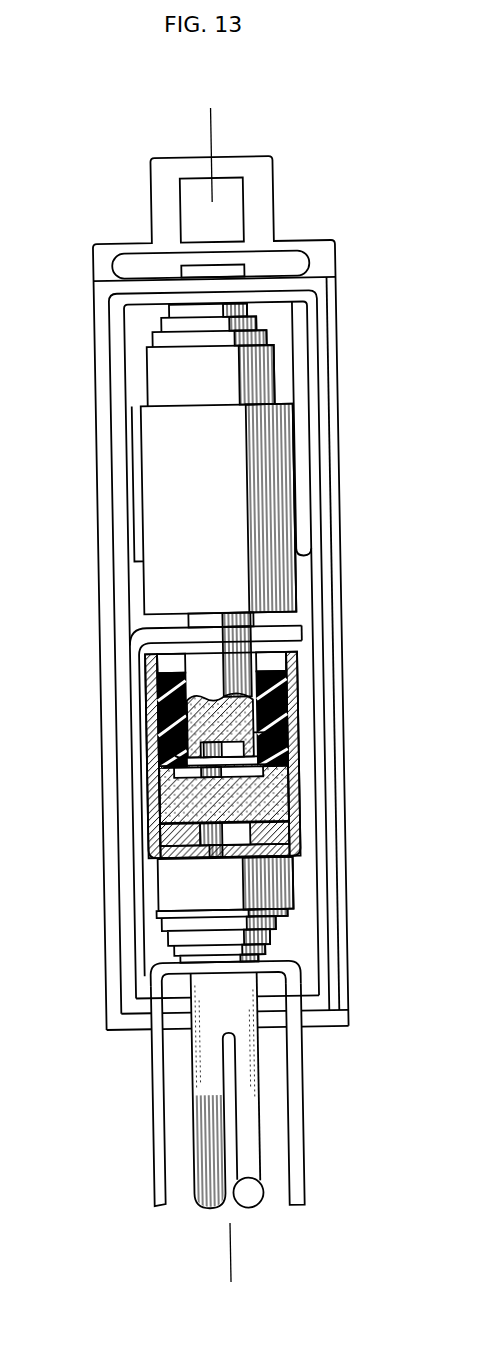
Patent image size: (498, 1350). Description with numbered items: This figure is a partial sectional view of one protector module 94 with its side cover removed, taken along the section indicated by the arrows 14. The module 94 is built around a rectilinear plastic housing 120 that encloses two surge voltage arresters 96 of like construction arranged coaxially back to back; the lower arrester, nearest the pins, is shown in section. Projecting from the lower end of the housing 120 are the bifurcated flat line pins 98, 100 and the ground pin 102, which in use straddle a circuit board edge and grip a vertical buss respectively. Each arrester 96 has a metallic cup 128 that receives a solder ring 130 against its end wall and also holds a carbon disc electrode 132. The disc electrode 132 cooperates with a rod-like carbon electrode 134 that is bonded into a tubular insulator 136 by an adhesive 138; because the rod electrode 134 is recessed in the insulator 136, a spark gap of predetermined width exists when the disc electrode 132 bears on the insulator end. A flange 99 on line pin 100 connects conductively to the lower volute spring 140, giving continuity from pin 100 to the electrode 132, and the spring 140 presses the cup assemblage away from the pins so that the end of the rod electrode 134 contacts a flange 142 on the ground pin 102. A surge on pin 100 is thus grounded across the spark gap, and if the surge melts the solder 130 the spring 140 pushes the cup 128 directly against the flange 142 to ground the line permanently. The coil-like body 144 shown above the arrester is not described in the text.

The section line 14- 14 is at (142, 122).
The module 94 is at (345, 976).
The surge voltage arrester 96 is at (311, 765).
The line pin 98 is at (293, 1204).
The flange 99 is at (274, 966).
The line pin 100 is at (145, 1200).
The ground pin 102 is at (251, 1205).
The rectilinear plastic housing 120 is at (343, 645).
The metallic cup 128 is at (295, 810).
The solder ring 130 is at (295, 830).
The carbon disc electrode 132 is at (160, 793).
The carbon rod electrode 134 is at (296, 703).
The tubular insulator 136 is at (293, 738).
The adhesive 138 is at (162, 702).
The lower volute spring 140 is at (281, 892).
The flange 142 is at (297, 628).
The coil 144 is at (276, 294).